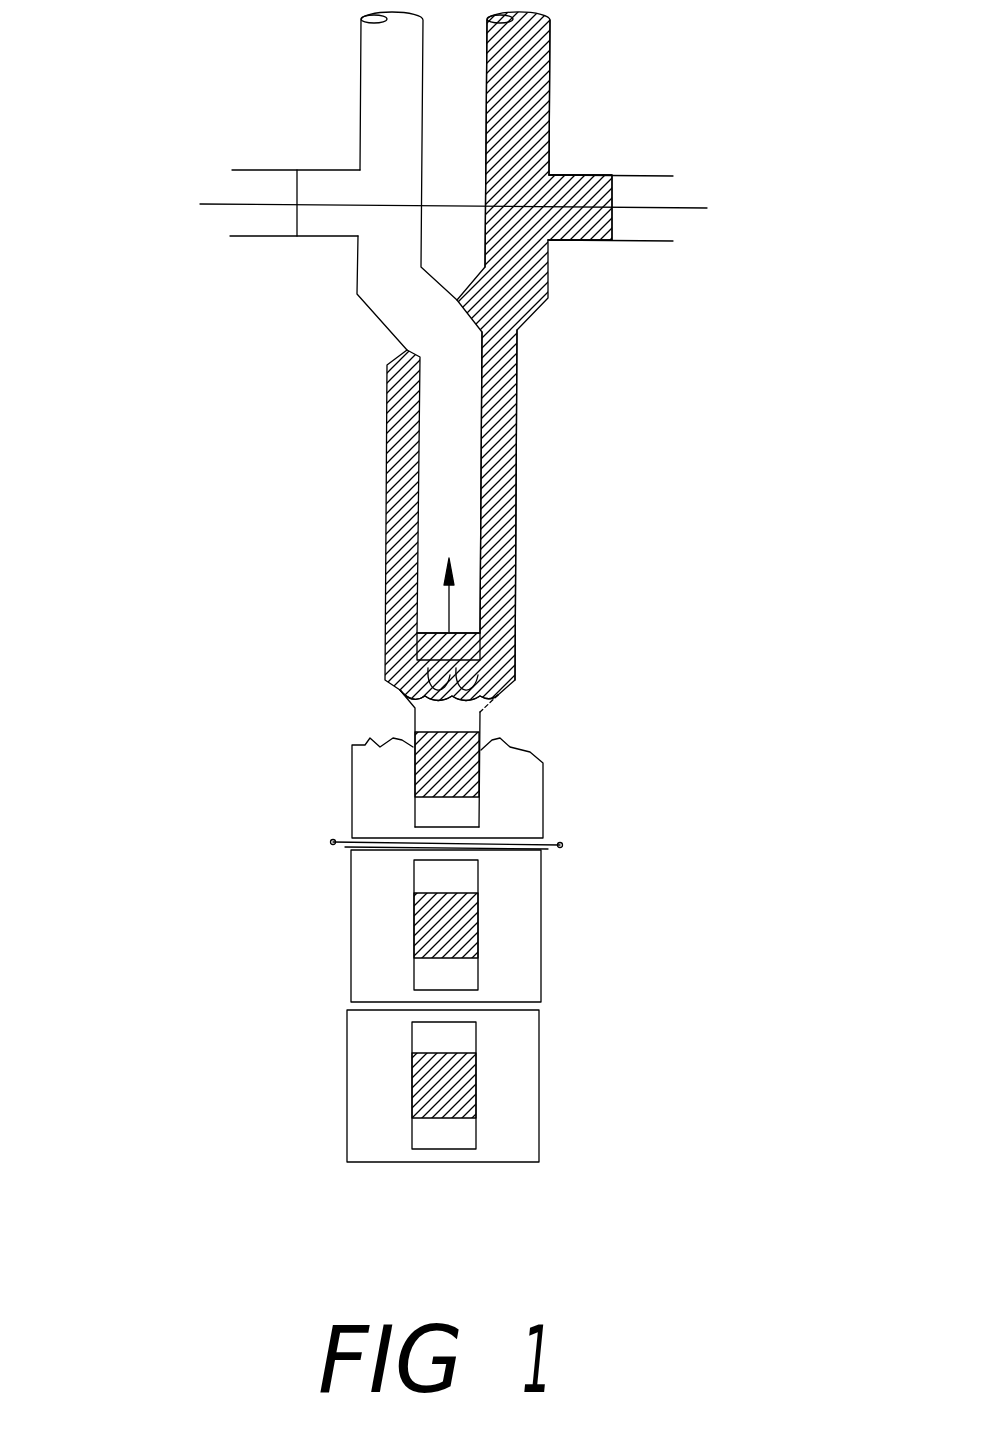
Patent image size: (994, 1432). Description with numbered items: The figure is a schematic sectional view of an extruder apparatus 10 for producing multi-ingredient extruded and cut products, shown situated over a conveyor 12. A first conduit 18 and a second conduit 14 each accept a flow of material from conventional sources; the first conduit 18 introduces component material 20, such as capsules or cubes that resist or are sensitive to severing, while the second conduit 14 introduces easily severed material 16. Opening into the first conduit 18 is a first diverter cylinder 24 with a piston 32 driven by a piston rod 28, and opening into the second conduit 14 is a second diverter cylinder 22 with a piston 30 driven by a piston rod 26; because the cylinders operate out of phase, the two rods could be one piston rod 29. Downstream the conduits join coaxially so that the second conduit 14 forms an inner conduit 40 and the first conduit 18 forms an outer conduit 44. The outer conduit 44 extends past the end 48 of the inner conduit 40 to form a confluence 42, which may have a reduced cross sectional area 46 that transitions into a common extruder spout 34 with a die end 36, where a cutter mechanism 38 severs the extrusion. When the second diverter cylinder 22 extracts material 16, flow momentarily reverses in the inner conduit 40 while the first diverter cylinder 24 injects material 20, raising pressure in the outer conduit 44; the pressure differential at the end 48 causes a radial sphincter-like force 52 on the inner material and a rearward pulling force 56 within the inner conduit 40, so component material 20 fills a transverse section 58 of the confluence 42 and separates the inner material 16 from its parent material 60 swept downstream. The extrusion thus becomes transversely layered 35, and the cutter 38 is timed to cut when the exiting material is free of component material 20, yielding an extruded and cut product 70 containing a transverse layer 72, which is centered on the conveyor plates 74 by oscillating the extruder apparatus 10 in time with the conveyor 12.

The extruder apparatus 10 is at (362, 428).
The conveyor 12 is at (546, 1133).
The second conduit 14 is at (358, 50).
The easily severed material 16 is at (388, 123).
The first conduit 18 is at (552, 53).
The component material 20 is at (528, 118).
The second diverter cylinder 22 is at (312, 167).
The first diverter cylinder 24 is at (592, 175).
The piston rod 26 is at (225, 205).
The piston rod 28 is at (685, 210).
The one piston rod 29 is at (457, 205).
The piston 30 is at (293, 183).
The piston 32 is at (612, 200).
The common extruder spout 34 is at (479, 773).
The transversely layered extrusion 35 is at (417, 770).
The die end 36 is at (460, 827).
The cutter mechanism 38 is at (563, 848).
The inner conduit 40 is at (483, 432).
The confluence 42 is at (405, 690).
The outer conduit 44 is at (513, 568).
The reduced cross sectional area 46 is at (413, 706).
The end of inner conduit 48 is at (470, 660).
The radial sphincter-like force 52 is at (392, 683).
The rearward pulling force 56 is at (443, 615).
The transverse section 58 is at (498, 695).
The parent material 60 is at (453, 713).
The extruded and cut product 70 is at (413, 945).
The transverse layer 72 is at (415, 928).
The conveyor plates 74 is at (350, 992).